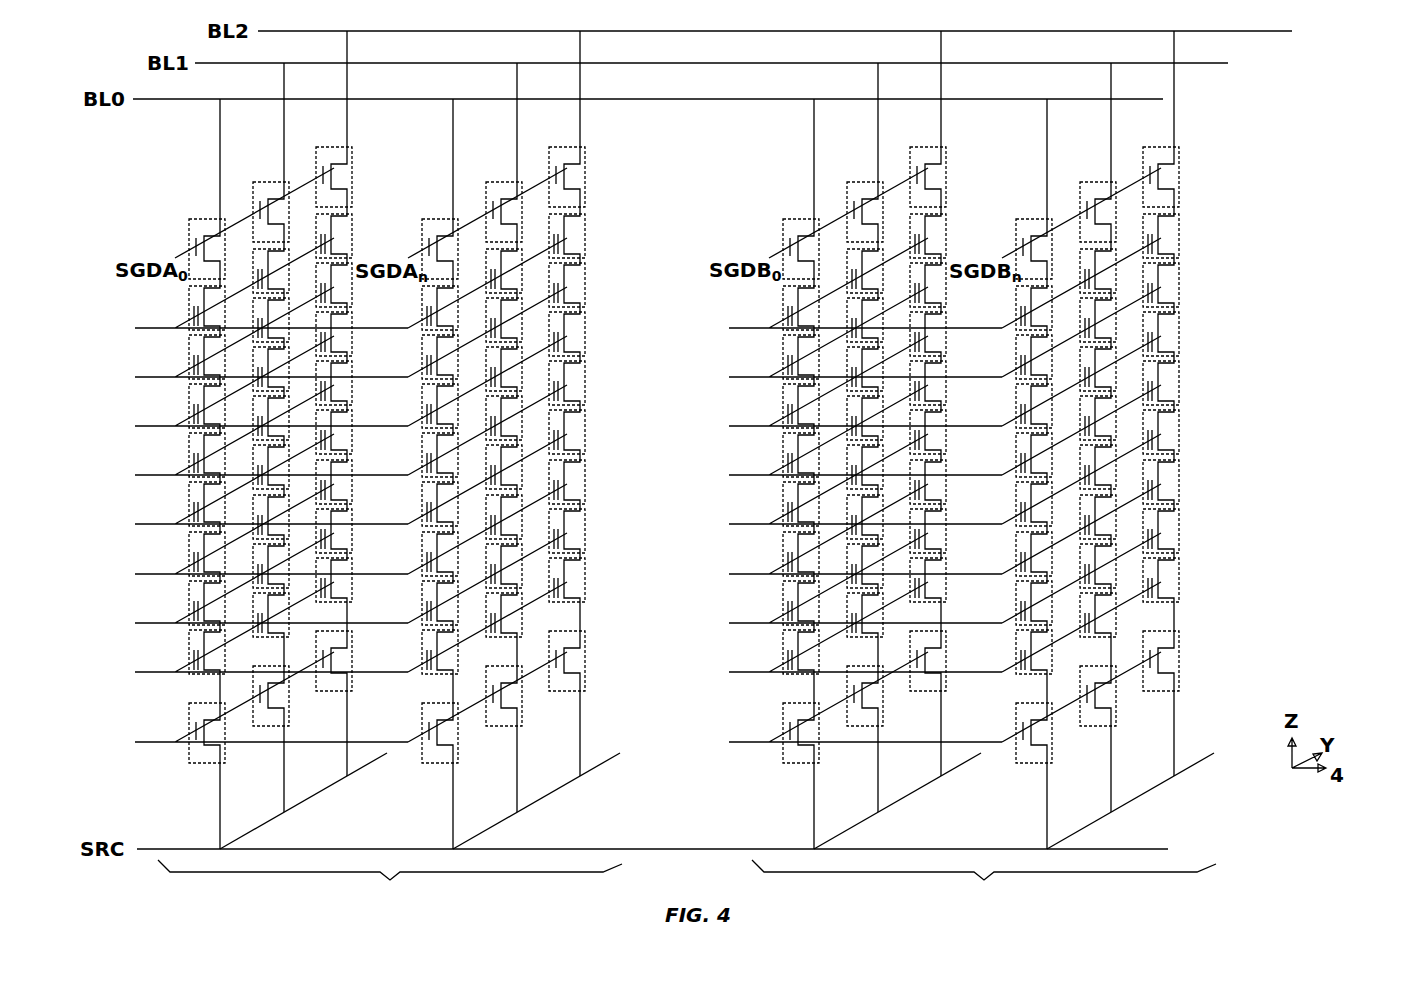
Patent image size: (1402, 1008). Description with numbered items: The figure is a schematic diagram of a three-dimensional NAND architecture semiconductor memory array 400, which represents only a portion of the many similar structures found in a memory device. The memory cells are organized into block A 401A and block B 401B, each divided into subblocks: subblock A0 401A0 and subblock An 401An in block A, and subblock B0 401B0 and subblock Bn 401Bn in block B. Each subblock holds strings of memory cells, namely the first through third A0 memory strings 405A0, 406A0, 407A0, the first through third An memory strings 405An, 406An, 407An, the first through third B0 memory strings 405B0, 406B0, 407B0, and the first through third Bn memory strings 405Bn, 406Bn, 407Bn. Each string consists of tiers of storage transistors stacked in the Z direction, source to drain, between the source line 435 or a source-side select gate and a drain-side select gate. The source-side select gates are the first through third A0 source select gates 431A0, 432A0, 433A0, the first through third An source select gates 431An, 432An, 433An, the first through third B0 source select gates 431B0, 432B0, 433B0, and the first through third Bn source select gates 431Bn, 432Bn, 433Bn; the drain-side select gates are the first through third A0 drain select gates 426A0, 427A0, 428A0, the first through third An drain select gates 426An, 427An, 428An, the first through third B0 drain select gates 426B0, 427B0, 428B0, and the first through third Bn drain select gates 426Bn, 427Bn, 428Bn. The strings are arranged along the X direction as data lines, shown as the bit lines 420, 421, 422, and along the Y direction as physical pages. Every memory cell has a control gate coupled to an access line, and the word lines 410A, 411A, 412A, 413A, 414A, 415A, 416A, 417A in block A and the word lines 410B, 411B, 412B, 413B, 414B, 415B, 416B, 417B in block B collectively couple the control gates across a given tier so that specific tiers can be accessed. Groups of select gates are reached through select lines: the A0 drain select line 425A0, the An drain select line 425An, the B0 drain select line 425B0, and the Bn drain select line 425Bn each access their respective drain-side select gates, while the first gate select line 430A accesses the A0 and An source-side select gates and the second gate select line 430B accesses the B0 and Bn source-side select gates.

The 3D NAND architecture semiconductor memory array 400 is at (1306, 85).
The bit line BL0 420 is at (682, 98).
The bit line BL1 421 is at (745, 62).
The bit line BL2 422 is at (810, 30).
The source line SRC 435 is at (180, 847).
The block A 401A is at (490, 873).
The block B 401B is at (1084, 873).
The subblock A0 401A0 is at (331, 813).
The subblock An 401An is at (566, 813).
The subblock B0 401B0 is at (925, 813).
The subblock Bn 401Bn is at (1160, 813).
The word line WL7_0 417A is at (150, 328).
The word line WL6_0 416A is at (150, 377).
The word line WL5_0 415A is at (150, 426).
The word line WL4_0 414A is at (150, 475).
The word line WL3_0 413A is at (150, 524).
The word line WL2_0 412A is at (150, 574).
The word line WL1_0 411A is at (150, 623).
The word line WL0_0 410A is at (150, 672).
The gate select line SGS_0 430A is at (144, 742).
The word line WL7_1 417B is at (744, 328).
The word line WL6_1 416B is at (744, 377).
The word line WL5_1 415B is at (744, 426).
The word line WL4_1 414B is at (744, 475).
The word line WL3_1 413B is at (744, 524).
The word line WL2_1 412B is at (744, 574).
The word line WL1_1 411B is at (744, 623).
The word line WL0_1 410B is at (744, 672).
The gate select line SGS_1 430B is at (738, 742).
The A0 SGD line SGDA_0 425A0 is at (177, 253).
The first A0 drain-side select gate 426A0 is at (196, 218).
The second A0 drain-side select gate 427A0 is at (260, 182).
The third A0 drain-side select gate 428A0 is at (318, 147).
The An SGD line SGDA_n 425An is at (404, 256).
The first An drain-side select gate 426An is at (429, 219).
The second An drain-side select gate 427An is at (493, 180).
The third An drain-side select gate 428An is at (553, 147).
The B0 SGD line SGDB_0 425B0 is at (771, 253).
The first B0 drain-side select gate 426B0 is at (790, 218).
The second B0 drain-side select gate 427B0 is at (854, 182).
The third B0 drain-side select gate 428B0 is at (912, 147).
The Bn SGD line SGDB_n 425Bn is at (998, 256).
The first Bn drain-side select gate 426Bn is at (1023, 219).
The second Bn drain-side select gate 427Bn is at (1087, 180).
The third Bn drain-side select gate 428Bn is at (1147, 147).
The first A0 source-side select gate 431A0 is at (222, 750).
The second A0 source-side select gate 432A0 is at (288, 710).
The third A0 source-side select gate 433A0 is at (352, 678).
The first An source-side select gate 431An is at (456, 750).
The second An source-side select gate 432An is at (521, 710).
The third An source-side select gate 433An is at (586, 678).
The first B0 source-side select gate 431B0 is at (816, 750).
The second B0 source-side select gate 432B0 is at (882, 710).
The third B0 source-side select gate 433B0 is at (946, 678).
The first Bn source-side select gate 431Bn is at (1050, 750).
The second Bn source-side select gate 432Bn is at (1115, 710).
The third Bn source-side select gate 433Bn is at (1180, 678).
The first A0 memory string 405A0 is at (227, 388).
The second A0 memory string 406A0 is at (289, 333).
The third A0 memory string 407A0 is at (351, 288).
The first An memory string 405An is at (460, 388).
The second An memory string 406An is at (522, 332).
The third An memory string 407An is at (585, 288).
The first B0 memory string 405B0 is at (821, 388).
The second B0 memory string 406B0 is at (883, 333).
The third B0 memory string 407B0 is at (945, 288).
The first Bn memory string 405Bn is at (1054, 388).
The second Bn memory string 406Bn is at (1116, 332).
The third Bn memory string 407Bn is at (1179, 288).